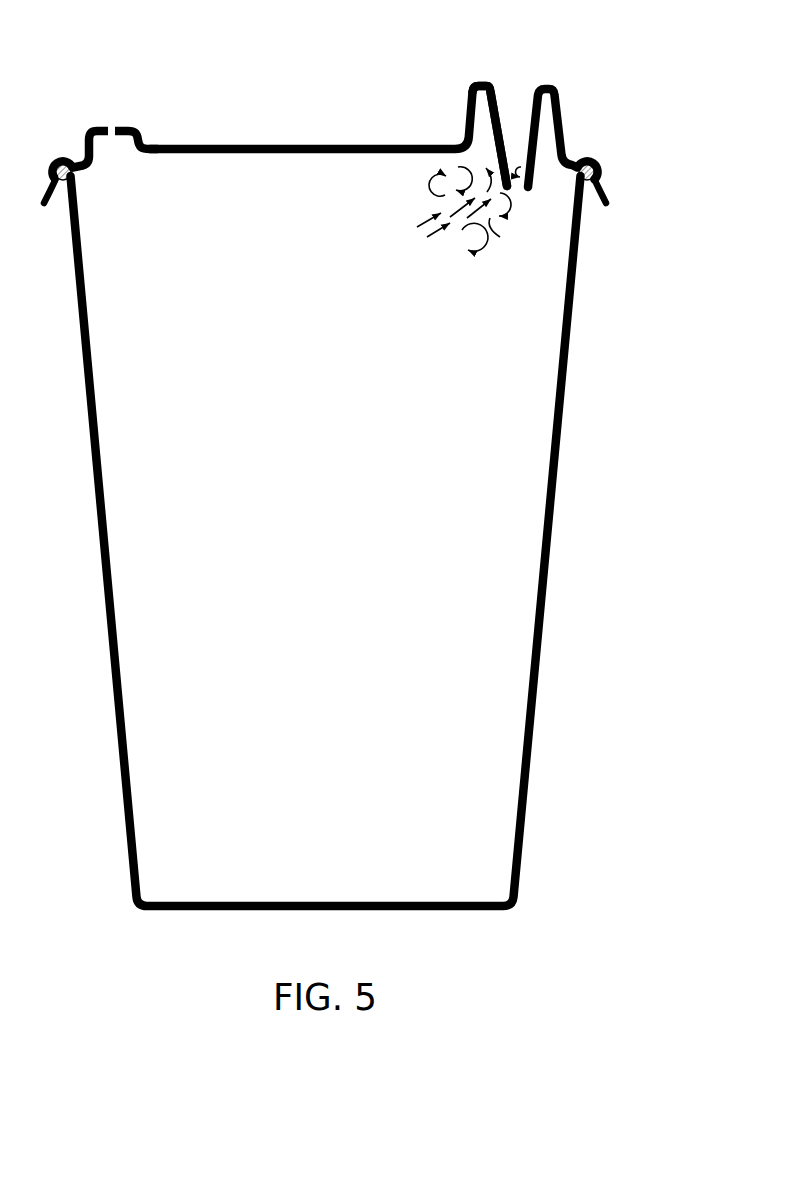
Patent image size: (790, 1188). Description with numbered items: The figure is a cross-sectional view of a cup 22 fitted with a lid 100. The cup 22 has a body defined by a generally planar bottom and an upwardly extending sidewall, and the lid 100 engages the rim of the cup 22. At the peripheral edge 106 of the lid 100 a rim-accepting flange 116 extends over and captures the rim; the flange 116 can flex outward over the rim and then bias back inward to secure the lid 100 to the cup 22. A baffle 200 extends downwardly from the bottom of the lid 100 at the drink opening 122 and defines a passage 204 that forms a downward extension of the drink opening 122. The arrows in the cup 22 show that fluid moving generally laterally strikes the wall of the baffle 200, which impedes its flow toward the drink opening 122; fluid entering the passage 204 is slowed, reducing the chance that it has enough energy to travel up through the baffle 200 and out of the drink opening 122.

The cup 22 is at (556, 569).
The lid 100 is at (397, 139).
The peripheral edge 106 is at (617, 193).
The rim-accepting flange 116 is at (600, 164).
The drink opening 122 is at (544, 58).
The baffle 200 is at (546, 163).
The passage 204 is at (519, 128).